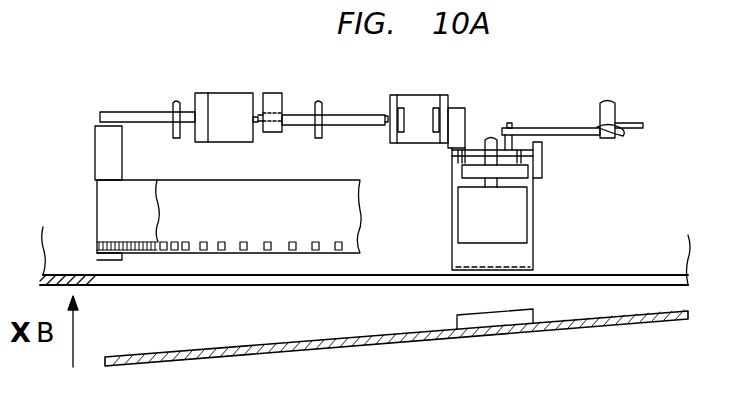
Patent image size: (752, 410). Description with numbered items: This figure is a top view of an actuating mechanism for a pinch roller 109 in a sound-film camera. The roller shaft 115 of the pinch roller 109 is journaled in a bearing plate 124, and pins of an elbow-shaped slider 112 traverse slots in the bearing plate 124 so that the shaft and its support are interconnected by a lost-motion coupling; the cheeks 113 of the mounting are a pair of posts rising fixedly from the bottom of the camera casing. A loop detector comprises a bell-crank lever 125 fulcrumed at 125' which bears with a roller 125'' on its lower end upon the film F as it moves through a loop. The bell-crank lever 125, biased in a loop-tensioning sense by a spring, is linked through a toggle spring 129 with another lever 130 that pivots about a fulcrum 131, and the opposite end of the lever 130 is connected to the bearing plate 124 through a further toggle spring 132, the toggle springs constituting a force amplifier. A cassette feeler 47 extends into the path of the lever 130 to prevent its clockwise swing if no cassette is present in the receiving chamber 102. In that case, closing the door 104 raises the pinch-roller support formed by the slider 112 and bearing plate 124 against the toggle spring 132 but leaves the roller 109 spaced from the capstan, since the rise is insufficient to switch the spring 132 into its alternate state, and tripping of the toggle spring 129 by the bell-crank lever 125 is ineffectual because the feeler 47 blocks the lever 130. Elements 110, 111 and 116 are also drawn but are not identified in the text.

The receiving chamber 102 is at (657, 234).
The door 104 is at (207, 349).
The pinch roller 109 is at (515, 220).
The pivot member 110 is at (567, 127).
The lever arm 111 is at (507, 126).
The elbow-shaped slider 112 is at (455, 258).
The cheeks 113 is at (443, 156).
The roller shaft 115 is at (488, 138).
The stop block 116 is at (465, 319).
The bearing plate 124 is at (460, 173).
The bell-crank lever 125 is at (147, 96).
The fulcrum 125' is at (194, 97).
The roller 125'' is at (77, 153).
The toggle spring 129 is at (228, 103).
The cassette feeler 47 is at (273, 97).
The lever 130 is at (345, 116).
The fulcrum 131 is at (320, 134).
The toggle spring 132 is at (413, 101).
The film F is at (262, 221).